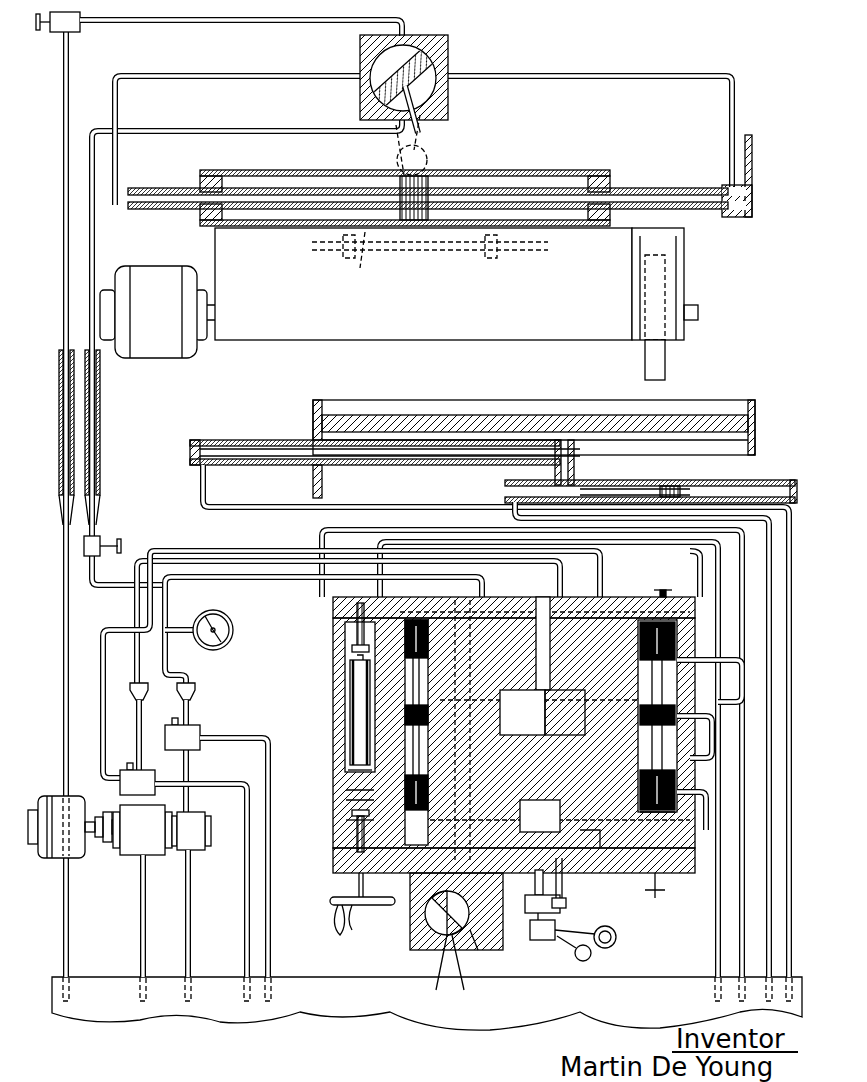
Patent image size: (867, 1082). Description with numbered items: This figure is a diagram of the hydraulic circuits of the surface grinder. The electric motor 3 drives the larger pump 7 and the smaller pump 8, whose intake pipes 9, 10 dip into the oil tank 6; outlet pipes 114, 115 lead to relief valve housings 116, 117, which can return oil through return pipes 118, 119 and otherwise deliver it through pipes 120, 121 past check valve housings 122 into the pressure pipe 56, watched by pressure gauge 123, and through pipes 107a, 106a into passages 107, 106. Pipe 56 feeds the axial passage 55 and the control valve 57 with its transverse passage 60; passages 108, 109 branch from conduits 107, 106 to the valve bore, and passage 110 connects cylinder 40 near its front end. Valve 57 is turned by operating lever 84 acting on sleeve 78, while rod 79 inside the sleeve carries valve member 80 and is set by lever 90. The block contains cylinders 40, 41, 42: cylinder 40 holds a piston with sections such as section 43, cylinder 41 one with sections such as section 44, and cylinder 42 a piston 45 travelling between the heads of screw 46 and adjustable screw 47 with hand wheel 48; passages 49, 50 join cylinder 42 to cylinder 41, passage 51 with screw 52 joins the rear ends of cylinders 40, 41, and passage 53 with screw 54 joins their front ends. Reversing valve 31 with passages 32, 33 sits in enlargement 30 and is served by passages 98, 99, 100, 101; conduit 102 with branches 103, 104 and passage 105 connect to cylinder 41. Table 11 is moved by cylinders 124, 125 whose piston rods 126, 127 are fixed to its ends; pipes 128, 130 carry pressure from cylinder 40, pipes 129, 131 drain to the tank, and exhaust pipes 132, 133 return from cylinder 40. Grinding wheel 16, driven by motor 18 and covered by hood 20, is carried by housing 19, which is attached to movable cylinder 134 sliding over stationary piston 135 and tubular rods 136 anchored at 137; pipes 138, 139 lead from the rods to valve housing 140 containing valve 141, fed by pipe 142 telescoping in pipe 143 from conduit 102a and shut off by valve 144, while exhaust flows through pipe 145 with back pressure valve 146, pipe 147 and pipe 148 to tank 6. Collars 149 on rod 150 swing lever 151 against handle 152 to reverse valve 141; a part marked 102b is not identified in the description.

The electric motor 3 is at (54, 860).
The tank 6 is at (300, 1000).
The pump 7 is at (130, 850).
The pump 8 is at (198, 850).
The intake pipe 9 is at (140, 916).
The intake pipe 10 is at (190, 924).
The work carrying table 11 is at (688, 414).
The grinding wheel 16 is at (648, 358).
The driving motor 18 is at (154, 346).
The housing 19 is at (412, 342).
The hood 20 is at (686, 270).
The enlargement 30 is at (410, 936).
The valve 31 is at (425, 972).
The transverse passage 32 is at (471, 971).
The transverse passage 33 is at (424, 916).
The cylinder 40 is at (652, 878).
The cylinder 41 is at (336, 866).
The cylinder 42 is at (336, 852).
The piston section 43 is at (690, 662).
The piston section 44 is at (420, 596).
The piston 45 is at (346, 730).
The screw 46 is at (356, 640).
The adjustable screw 47 is at (346, 896).
The hand wheel 48 is at (349, 924).
The passage 49 is at (356, 684).
The passage 50 is at (346, 822).
The conduit 51 is at (648, 548).
The screw 52 is at (668, 590).
The conduit 53 is at (590, 872).
The control screw 54 is at (656, 896).
The axial passage 55 is at (550, 620).
The pressure liquid carrying pipe 56 is at (318, 600).
The valve 57 is at (350, 774).
The passage 60 is at (530, 712).
The sleeve 78 is at (572, 892).
The rod 79 is at (534, 940).
The cylindrical valve member 80 is at (532, 891).
The operating lever 84 is at (585, 952).
The manually operable lever 90 is at (545, 946).
The conduit 98 is at (370, 830).
The passage 99 is at (388, 884).
The passage 100 is at (560, 560).
The passage 101 is at (484, 952).
The conduit 102 is at (520, 566).
The pipe 102a is at (382, 560).
The valve spool 102b is at (416, 732).
The connecting passage 103 is at (540, 538).
The passage 104 is at (540, 816).
The passage 105 is at (352, 710).
The passage 106 is at (722, 636).
The pipe 106a is at (160, 660).
The passage 107 is at (720, 712).
The pipe 107a is at (112, 632).
The passage 108 is at (566, 715).
The passage 109 is at (720, 794).
The passage 110 is at (680, 816).
The outlet pipe 114 is at (110, 812).
The outlet pipe 115 is at (190, 776).
The relief valve housing 116 is at (120, 786).
The relief valve housing 117 is at (200, 730).
The return pipe 118 is at (246, 812).
The return pipe 119 is at (345, 792).
The pipe 120 is at (100, 722).
The pipe 121 is at (196, 710).
The check valve housing 122 is at (132, 688).
The pressure gauge 123 is at (232, 620).
The hydraulic cylinder 124 is at (278, 440).
The hydraulic cylinder 125 is at (722, 482).
The piston rod 126 is at (626, 452).
The piston rod 127 is at (398, 464).
The pipe 128 is at (566, 452).
The pipe 129 is at (298, 512).
The pressure pipe 130 is at (488, 542).
The drain pipe 131 is at (790, 536).
The exhaust pipe 132 is at (766, 924).
The exhaust pipe 133 is at (738, 870).
The movable cylinder 134 is at (520, 160).
The stationary piston 135 is at (410, 228).
The tubular piston rods 136 is at (190, 210).
The connection 137 is at (756, 202).
The pipe 138 is at (690, 82).
The pipe 139 is at (232, 78).
The valve housing 140 is at (452, 108).
The valve 141 is at (436, 64).
The pipe 142 is at (182, 135).
The pipe 143 is at (103, 444).
The closing valve 144 is at (105, 536).
The pipe 145 is at (244, 24).
The back pressure valve 146 is at (55, 34).
The pipe 147 is at (60, 470).
The pipe 148 is at (62, 655).
The adjustable collars 149 is at (346, 262).
The rod 150 is at (445, 258).
The lever 151 is at (358, 262).
The handle 152 is at (398, 138).